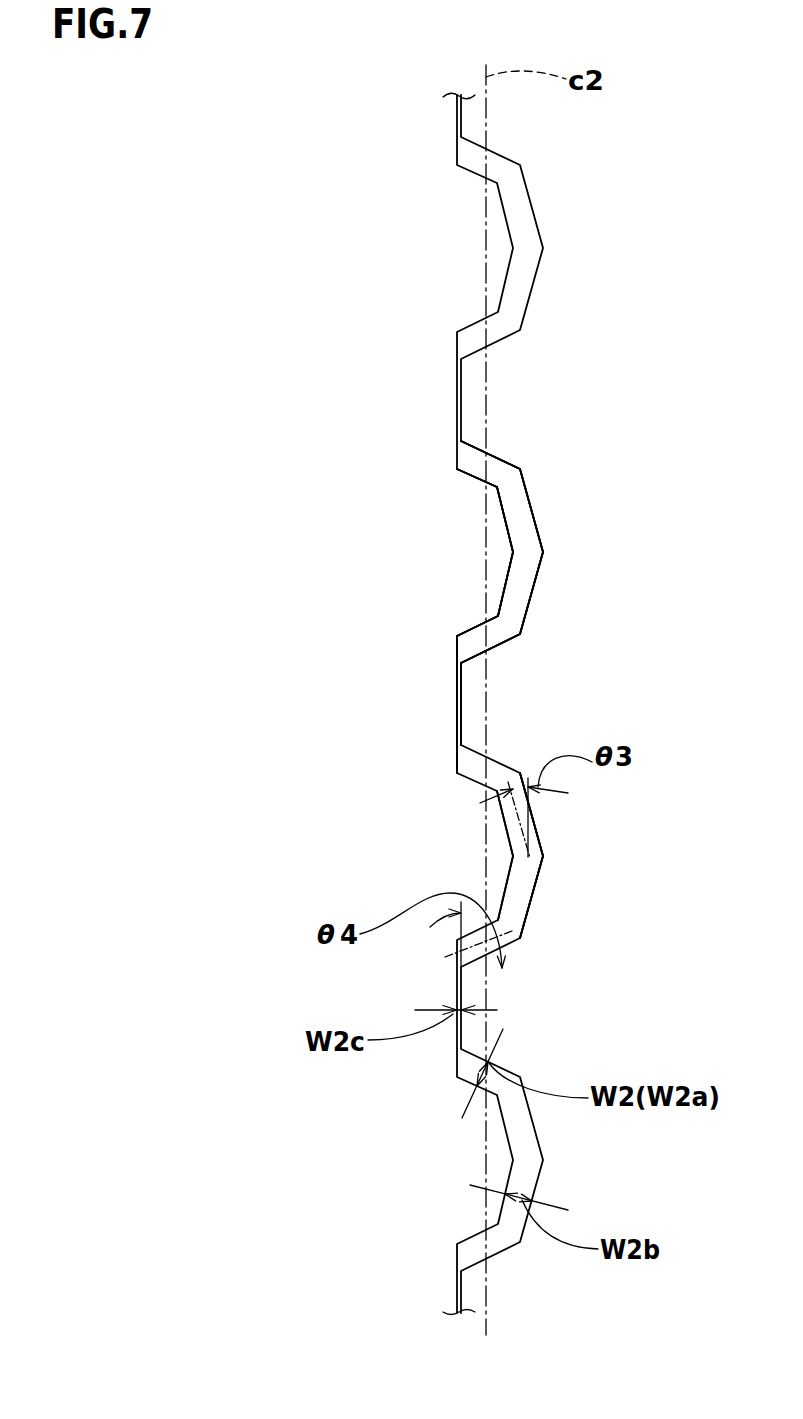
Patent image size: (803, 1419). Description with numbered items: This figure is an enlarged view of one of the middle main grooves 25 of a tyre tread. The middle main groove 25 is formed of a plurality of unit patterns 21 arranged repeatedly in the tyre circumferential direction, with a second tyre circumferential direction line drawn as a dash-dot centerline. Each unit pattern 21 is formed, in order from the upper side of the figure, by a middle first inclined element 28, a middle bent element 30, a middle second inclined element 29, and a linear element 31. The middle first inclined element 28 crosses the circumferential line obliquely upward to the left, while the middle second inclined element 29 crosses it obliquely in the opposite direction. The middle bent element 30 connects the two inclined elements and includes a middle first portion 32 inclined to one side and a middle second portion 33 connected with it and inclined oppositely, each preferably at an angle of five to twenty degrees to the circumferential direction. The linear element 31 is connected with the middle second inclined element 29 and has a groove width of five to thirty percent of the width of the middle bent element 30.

The middle main groove 25 is at (417, 128).
The unit pattern 21 is at (317, 438).
The middle first inclined element 28 is at (471, 460).
The middle bent element 30 is at (524, 529).
The middle second inclined element 29 is at (473, 647).
The linear element 31 is at (452, 705).
The middle first portion 32 is at (507, 825).
The middle second portion 33 is at (517, 895).